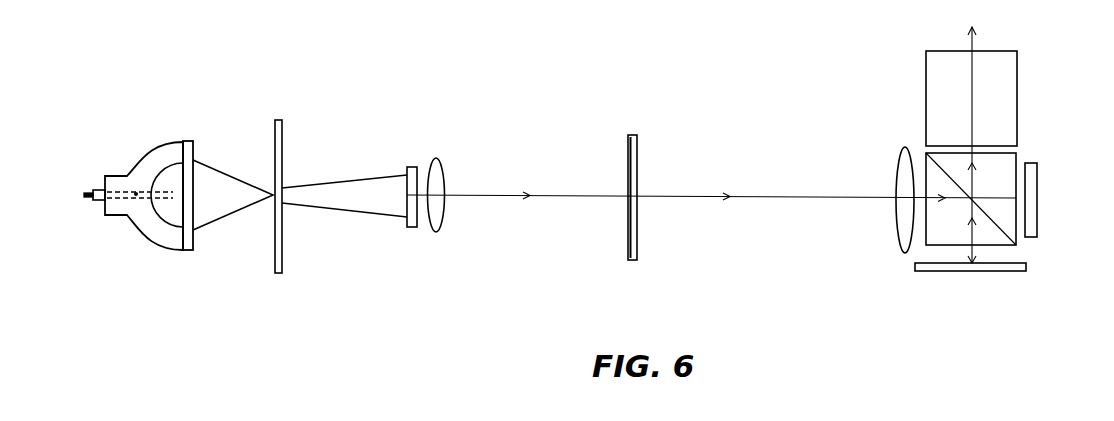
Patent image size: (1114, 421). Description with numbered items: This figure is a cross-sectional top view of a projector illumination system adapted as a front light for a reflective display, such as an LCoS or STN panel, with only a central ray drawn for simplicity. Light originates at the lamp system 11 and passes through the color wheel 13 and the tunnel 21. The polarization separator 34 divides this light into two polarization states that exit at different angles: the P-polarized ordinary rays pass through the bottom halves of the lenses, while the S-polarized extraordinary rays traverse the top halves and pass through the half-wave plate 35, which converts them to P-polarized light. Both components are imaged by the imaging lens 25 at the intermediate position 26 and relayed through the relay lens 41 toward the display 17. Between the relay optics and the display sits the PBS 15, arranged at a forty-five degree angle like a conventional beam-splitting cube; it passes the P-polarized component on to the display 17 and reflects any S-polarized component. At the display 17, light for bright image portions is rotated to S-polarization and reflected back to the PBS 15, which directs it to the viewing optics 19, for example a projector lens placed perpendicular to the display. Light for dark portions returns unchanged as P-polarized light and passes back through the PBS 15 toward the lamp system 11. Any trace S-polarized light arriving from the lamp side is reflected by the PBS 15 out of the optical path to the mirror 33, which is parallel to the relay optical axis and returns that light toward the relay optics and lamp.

The lamp system 11 is at (142, 232).
The color wheel 13 is at (272, 264).
The tunnel 21 is at (325, 180).
The polarization separator 34 is at (411, 167).
The imaging lens 25 is at (438, 232).
The intermediate position 26 is at (606, 192).
The half-wave plate 35 is at (632, 135).
The relay lens 41 is at (902, 250).
The viewing optics 19 is at (1018, 72).
The PBS 15 is at (1017, 241).
The display 17 is at (1037, 176).
The mirror 33 is at (998, 272).